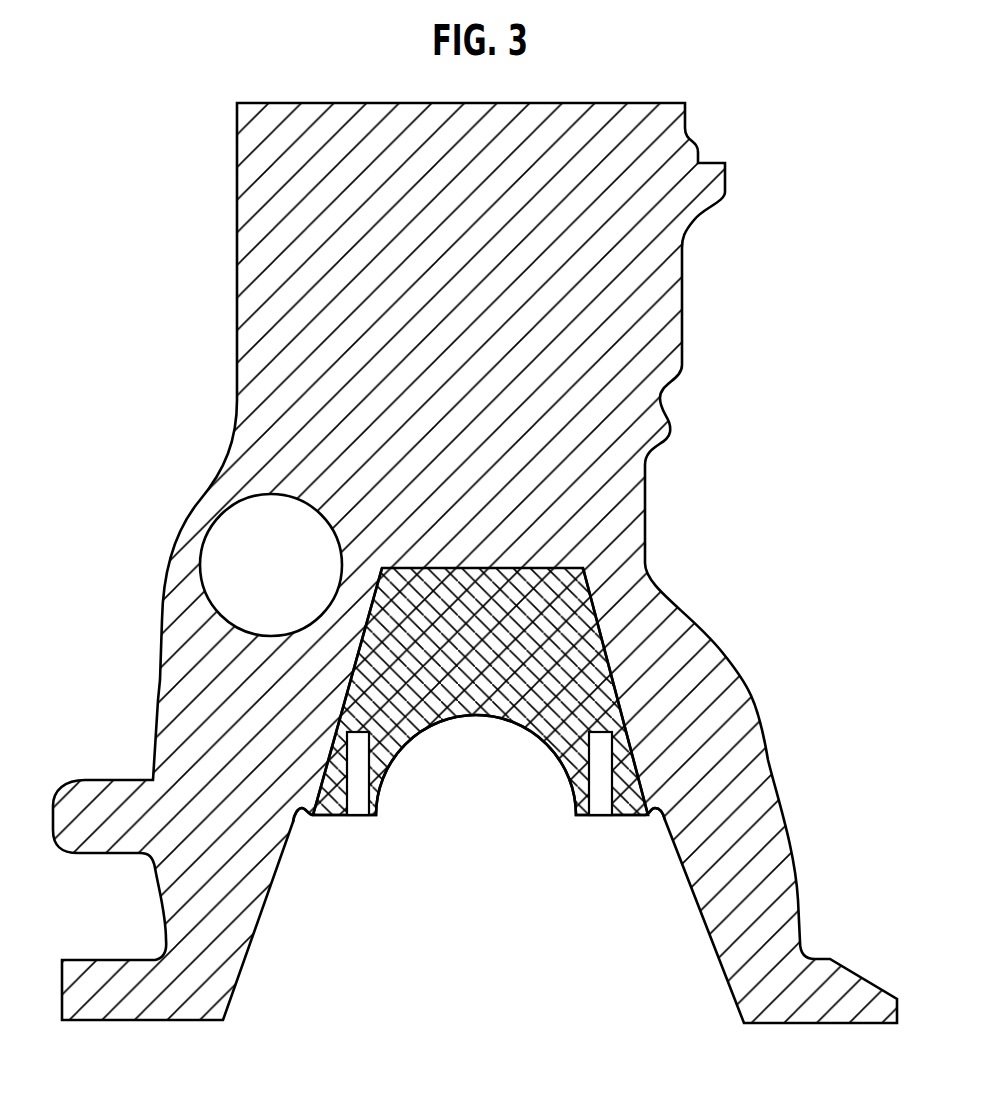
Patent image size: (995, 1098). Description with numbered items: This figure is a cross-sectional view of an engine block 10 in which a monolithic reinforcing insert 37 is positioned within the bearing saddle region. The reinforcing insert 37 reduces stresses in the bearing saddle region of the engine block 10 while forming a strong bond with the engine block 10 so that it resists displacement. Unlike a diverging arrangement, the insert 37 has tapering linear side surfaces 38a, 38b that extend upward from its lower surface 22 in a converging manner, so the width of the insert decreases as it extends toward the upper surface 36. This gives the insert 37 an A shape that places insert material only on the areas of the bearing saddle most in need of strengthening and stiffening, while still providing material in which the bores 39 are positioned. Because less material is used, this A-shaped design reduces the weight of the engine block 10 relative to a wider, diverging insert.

The engine block 10 is at (272, 175).
The upper surface 36 is at (485, 568).
The reinforcing insert 37 is at (552, 612).
The tapering linear side surface 38a is at (620, 700).
The tapering linear side surface 38b is at (340, 742).
The bores 39 is at (347, 820).
The lower surface 22 is at (313, 820).